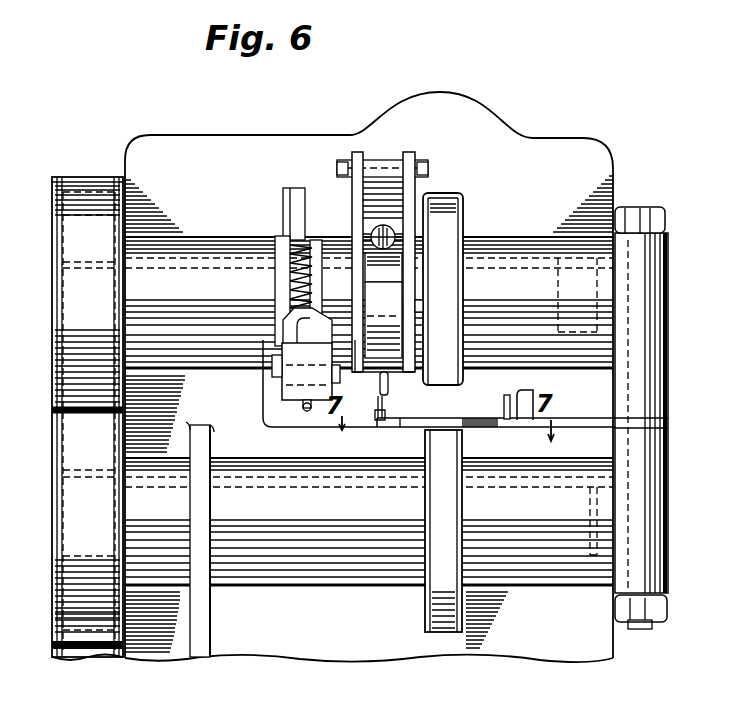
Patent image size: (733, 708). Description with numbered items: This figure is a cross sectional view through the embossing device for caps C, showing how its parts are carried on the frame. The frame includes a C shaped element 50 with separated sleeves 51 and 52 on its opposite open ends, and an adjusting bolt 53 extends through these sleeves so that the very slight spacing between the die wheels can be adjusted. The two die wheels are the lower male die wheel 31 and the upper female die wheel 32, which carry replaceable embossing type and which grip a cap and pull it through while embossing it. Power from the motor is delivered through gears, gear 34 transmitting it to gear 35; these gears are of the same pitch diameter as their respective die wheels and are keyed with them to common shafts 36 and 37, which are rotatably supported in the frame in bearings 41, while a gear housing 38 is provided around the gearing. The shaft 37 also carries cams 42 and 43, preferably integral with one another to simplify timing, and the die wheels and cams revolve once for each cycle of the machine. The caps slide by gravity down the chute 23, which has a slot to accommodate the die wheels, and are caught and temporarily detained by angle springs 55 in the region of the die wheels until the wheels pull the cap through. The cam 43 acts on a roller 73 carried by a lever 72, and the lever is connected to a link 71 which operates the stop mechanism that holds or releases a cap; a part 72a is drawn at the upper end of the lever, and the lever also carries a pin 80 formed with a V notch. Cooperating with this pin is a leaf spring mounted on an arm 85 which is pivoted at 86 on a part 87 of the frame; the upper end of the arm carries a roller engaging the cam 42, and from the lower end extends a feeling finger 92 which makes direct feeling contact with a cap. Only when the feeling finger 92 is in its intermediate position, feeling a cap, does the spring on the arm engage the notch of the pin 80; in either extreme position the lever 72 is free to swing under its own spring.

The chute 23 is at (385, 429).
The lower die wheel 31 is at (460, 511).
The upper die wheel 32 is at (459, 290).
The gear 34 is at (60, 613).
The gear 35 is at (87, 192).
The shaft 36 is at (213, 455).
The shaft 37 is at (62, 262).
The gear housing 38 is at (65, 462).
The bearings 41 is at (190, 249).
The cam 42 is at (295, 241).
The cam 43 is at (365, 259).
The C shaped element 50 is at (565, 141).
The sleeve 51 is at (618, 241).
The sleeve 52 is at (617, 593).
The adjusting bolt 53 is at (640, 207).
The angle springs 55 is at (386, 416).
The link 71 is at (389, 383).
The lever 72 is at (358, 211).
The bracket cross pin 72a is at (346, 168).
The roller 73 is at (370, 293).
The pin 80 is at (355, 366).
The arm 85 is at (284, 393).
The pivot 86 is at (281, 381).
The frame part 87 is at (300, 197).
The feeling finger 92 is at (303, 408).
The caps C is at (410, 430).